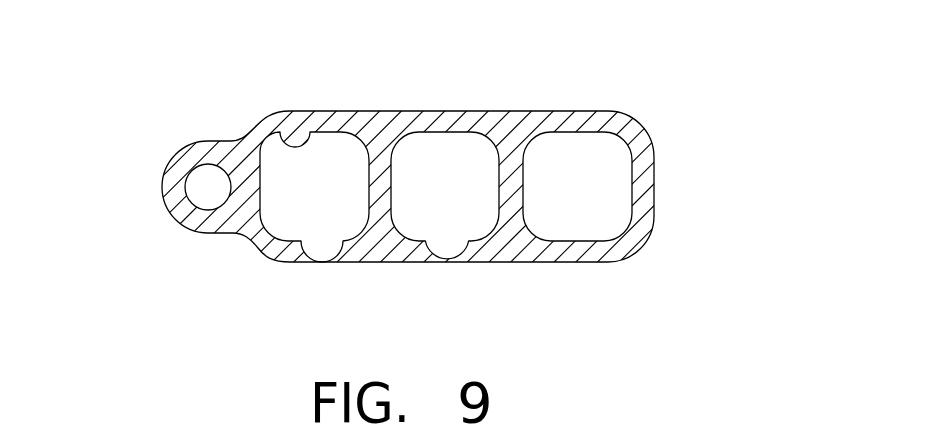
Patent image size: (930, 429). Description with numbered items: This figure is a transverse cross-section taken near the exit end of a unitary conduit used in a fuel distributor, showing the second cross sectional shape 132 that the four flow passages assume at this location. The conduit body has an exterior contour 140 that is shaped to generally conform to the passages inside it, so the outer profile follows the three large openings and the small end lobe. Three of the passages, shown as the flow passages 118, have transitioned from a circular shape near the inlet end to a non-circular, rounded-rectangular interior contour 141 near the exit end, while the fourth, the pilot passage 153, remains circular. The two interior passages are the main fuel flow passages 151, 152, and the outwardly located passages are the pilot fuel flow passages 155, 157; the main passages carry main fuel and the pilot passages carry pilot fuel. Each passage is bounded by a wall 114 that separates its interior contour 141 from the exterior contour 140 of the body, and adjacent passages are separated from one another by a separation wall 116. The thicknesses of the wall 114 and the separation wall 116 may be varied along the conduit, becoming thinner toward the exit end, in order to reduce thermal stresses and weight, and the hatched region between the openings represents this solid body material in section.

The wall 114 is at (585, 122).
The separation wall 116 is at (380, 160).
The flow passages 118 is at (458, 152).
The second cross sectional shape 132 is at (260, 125).
The exterior contour 140 is at (200, 232).
The interior contour 141 is at (432, 237).
The main fuel flow passage 151 is at (290, 203).
The main fuel flow passage 152 is at (473, 197).
The pilot passage 153 is at (207, 182).
The pilot fuel flow passage 155 is at (190, 187).
The pilot fuel flow passage 157 is at (605, 217).